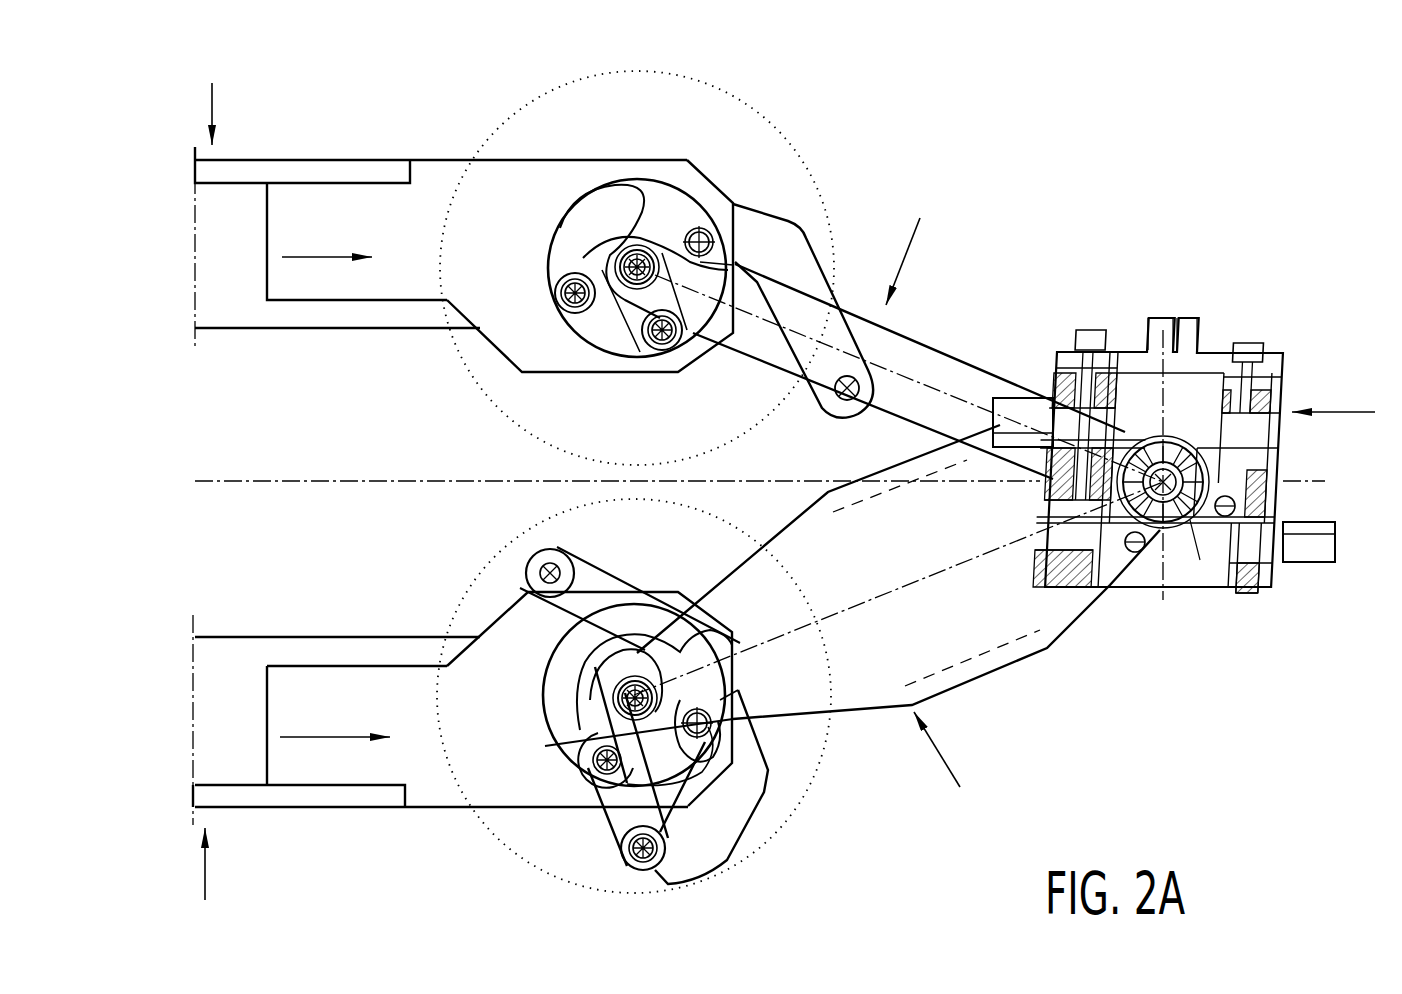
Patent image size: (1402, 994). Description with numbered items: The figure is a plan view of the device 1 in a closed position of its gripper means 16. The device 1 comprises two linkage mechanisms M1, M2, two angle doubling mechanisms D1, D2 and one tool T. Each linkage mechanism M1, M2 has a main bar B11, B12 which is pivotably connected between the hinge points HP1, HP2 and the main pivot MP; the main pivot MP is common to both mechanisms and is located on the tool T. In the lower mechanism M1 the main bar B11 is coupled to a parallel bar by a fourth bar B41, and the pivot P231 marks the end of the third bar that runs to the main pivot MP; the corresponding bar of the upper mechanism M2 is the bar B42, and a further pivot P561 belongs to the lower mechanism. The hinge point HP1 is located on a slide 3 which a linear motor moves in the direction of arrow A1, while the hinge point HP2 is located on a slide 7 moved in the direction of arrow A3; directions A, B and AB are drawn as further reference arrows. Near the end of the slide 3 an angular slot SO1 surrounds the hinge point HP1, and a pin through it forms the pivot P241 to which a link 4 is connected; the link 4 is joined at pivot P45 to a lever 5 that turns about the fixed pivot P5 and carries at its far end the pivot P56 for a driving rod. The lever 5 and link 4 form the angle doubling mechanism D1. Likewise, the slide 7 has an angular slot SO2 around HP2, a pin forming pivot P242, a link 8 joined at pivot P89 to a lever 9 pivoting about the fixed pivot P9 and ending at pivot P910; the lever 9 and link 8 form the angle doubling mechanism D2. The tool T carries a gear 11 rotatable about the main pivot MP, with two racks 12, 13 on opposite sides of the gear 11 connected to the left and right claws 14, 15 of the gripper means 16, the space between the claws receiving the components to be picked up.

The device 1 is at (178, 258).
The slide 3 is at (337, 770).
The link 4 is at (620, 820).
The lever 5 is at (733, 797).
The slide 7 is at (302, 203).
The link 8 is at (600, 320).
The lever 9 is at (783, 247).
The gear 11 is at (1187, 533).
The rack 12 is at (1308, 562).
The rack 13 is at (1015, 398).
The left claw 14 is at (1146, 330).
The right claw 15 is at (1190, 332).
The gripper means 16 is at (1195, 270).
The direction A is at (206, 866).
The arrow A1 is at (322, 737).
The arrow A3 is at (322, 260).
The direction AB is at (1352, 410).
The direction B is at (213, 110).
The main bar B11 is at (950, 628).
The main bar B12 is at (923, 367).
The fourth bar B41 is at (760, 762).
The bar B42 is at (723, 340).
The angle doubling mechanism D1 is at (778, 826).
The angle doubling mechanism D2 is at (708, 150).
The hinge point HP1 is at (613, 700).
The hinge point HP2 is at (645, 240).
The linkage mechanism M1 is at (955, 764).
The linkage mechanism M2 is at (914, 246).
The main pivot MP is at (1162, 522).
The fixed pivot P5 is at (712, 715).
The fixed pivot P9 is at (713, 227).
The pivot P45 is at (630, 850).
The pivot P56 is at (540, 557).
The pivot P89 is at (550, 288).
The pivot P231 is at (1140, 553).
The pivot P241 is at (587, 751).
The pivot P242 is at (668, 355).
The pivot P561 is at (1236, 504).
The pivot P910 is at (843, 398).
The angular slot SO1 is at (565, 685).
The angular slot SO2 is at (593, 217).
The tool T is at (1118, 318).